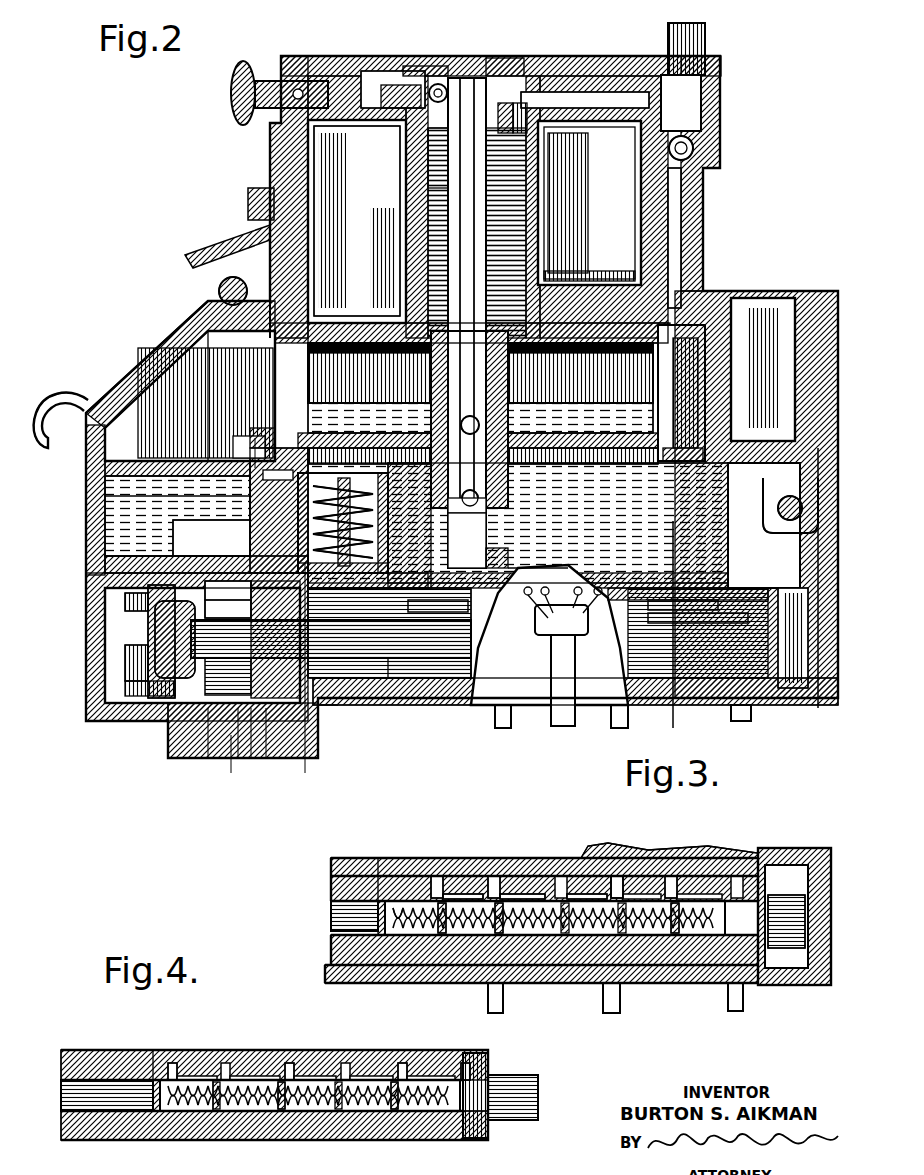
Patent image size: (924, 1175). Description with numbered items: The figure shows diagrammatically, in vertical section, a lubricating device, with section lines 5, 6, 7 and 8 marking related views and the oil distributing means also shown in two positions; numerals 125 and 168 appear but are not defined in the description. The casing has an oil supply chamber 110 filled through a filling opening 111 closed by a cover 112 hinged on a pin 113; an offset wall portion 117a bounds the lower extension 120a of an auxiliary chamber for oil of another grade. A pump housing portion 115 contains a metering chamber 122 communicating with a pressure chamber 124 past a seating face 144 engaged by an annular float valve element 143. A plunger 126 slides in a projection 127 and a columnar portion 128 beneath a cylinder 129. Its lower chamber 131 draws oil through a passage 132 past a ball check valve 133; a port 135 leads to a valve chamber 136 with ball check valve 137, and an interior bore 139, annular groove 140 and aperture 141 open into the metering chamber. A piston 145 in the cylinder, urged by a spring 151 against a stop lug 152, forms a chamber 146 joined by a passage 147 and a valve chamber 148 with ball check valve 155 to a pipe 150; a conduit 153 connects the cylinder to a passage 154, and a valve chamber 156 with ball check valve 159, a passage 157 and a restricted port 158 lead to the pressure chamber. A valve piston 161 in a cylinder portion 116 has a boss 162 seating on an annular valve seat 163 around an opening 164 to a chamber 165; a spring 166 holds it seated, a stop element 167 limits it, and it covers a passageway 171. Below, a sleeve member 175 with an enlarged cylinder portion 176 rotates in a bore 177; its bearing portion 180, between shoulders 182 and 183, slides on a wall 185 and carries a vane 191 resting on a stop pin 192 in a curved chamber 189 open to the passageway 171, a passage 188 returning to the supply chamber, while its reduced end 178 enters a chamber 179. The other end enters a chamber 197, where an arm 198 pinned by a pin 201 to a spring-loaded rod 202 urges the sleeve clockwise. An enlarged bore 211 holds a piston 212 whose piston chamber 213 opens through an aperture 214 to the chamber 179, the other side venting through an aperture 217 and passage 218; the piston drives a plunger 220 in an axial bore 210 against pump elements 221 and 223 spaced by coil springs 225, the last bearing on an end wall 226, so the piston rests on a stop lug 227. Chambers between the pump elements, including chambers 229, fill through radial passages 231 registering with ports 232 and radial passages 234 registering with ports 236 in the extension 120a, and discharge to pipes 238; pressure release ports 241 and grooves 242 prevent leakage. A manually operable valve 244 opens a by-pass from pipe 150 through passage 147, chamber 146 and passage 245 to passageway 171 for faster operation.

In FIG. 2, the section line 5— 5 is at (665, 513).
In FIG. 2, the section line 6— 6 is at (297, 555).
In FIG. 2, the section line 7— 7 is at (804, 433).
In FIG. 2, the section line 8— 8 is at (250, 430).
In FIG. 2, the operating oil supply chamber 110 is at (416, 523).
In FIG. 3, the operating oil supply chamber 110 is at (560, 850).
In FIG. 2, the filling opening 111 is at (150, 333).
In FIG. 2, the cover 112 is at (125, 355).
In FIG. 2, the pin 113 is at (212, 280).
In FIG. 2, the pump housing portion 115 is at (684, 448).
In FIG. 2, the cylinder portion 116 is at (449, 540).
In FIG. 2, the offset portion of interior wall 117a is at (547, 549).
In FIG. 2, the lower extension of auxiliary oil supply chamber 120a is at (627, 575).
In FIG. 3, the lower extension of auxiliary oil supply chamber 120a is at (600, 850).
In FIG. 2, the control or metering chamber 122 is at (330, 362).
In FIG. 2, the pressure chamber 124 is at (620, 195).
In FIG. 2, the valve stem 125 is at (405, 300).
In FIG. 2, the plunger 126 is at (455, 237).
In FIG. 2, the projection 127 is at (583, 455).
In FIG. 2, the columnar portion 128 is at (358, 390).
In FIG. 2, the cylinder 129 is at (548, 193).
In FIG. 2, the chamber 131 is at (450, 515).
In FIG. 2, the passage 132 is at (511, 555).
In FIG. 2, the ball check valve 133 is at (485, 498).
In FIG. 2, the port 135 is at (643, 433).
In FIG. 2, the valve chamber 136 is at (681, 393).
In FIG. 2, the ball check valve 137 is at (580, 418).
In FIG. 2, the interior bore 139 is at (494, 360).
In FIG. 2, the annular groove 140 is at (452, 355).
In FIG. 2, the aperture 141 is at (557, 347).
In FIG. 2, the annular float valve element 143 is at (369, 418).
In FIG. 2, the seating face 144 is at (518, 315).
In FIG. 2, the piston 145 is at (523, 110).
In FIG. 2, the chamber 146 is at (500, 108).
In FIG. 2, the passage 147 is at (623, 95).
In FIG. 2, the valve chamber 148 is at (682, 103).
In FIG. 2, the pipe 150 is at (678, 43).
In FIG. 2, the spring 151 is at (505, 178).
In FIG. 2, the stop lug 152 is at (458, 137).
In FIG. 2, the conduit 153 is at (537, 280).
In FIG. 2, the passage 154 is at (672, 218).
In FIG. 2, the ball check valve 155 is at (682, 145).
In FIG. 2, the valve chamber 156 is at (410, 60).
In FIG. 2, the passage 157 is at (357, 125).
In FIG. 2, the restricted port 158 is at (357, 221).
In FIG. 2, the ball check valve 159 is at (430, 76).
In FIG. 2, the valve piston 161 is at (258, 468).
In FIG. 2, the boss portion 162 is at (253, 430).
In FIG. 2, the annular valve seat 163 is at (300, 423).
In FIG. 2, the opening 164 is at (368, 433).
In FIG. 2, the chamber 165 is at (233, 453).
In FIG. 2, the spring 166 is at (357, 543).
In FIG. 2, the stop element 167 is at (368, 585).
In FIG. 2, the ball 168 is at (455, 420).
In FIG. 2, the passageway 171 is at (260, 473).
In FIG. 2, the sleeve member 175 is at (367, 683).
In FIG. 3, the sleeve member 175 is at (588, 950).
In FIG. 4, the sleeve member 175 is at (403, 1103).
In FIG. 2, the enlarged cylinder portion 176 is at (120, 707).
In FIG. 2, the bore 177 is at (480, 697).
In FIG. 3, the bore 177 is at (550, 957).
In FIG. 2, the end of reduced diameter 178 is at (110, 590).
In FIG. 2, the chamber 179 is at (145, 677).
In FIG. 2, the bearing portion 180 is at (243, 713).
In FIG. 2, the annular off-set shoulder 182 is at (167, 703).
In FIG. 2, the annular off-set shoulder 183 is at (258, 745).
In FIG. 2, the wall 185 is at (230, 720).
In FIG. 2, the passage 188 is at (312, 737).
In FIG. 2, the curved chamber 189 is at (177, 496).
In FIG. 2, the vane 191 is at (187, 540).
In FIG. 2, the stop pin 192 is at (185, 527).
In FIG. 2, the chamber 197 is at (770, 673).
In FIG. 3, the chamber 197 is at (793, 870).
In FIG. 2, the arm 198 is at (823, 687).
In FIG. 2, the pin 201 is at (774, 502).
In FIG. 2, the rod 202 is at (795, 495).
In FIG. 2, the axial bore 210 is at (458, 660).
In FIG. 3, the axial bore 210 is at (325, 888).
In FIG. 4, the axial bore 210 is at (80, 1087).
In FIG. 2, the enlarged bore 211 is at (200, 713).
In FIG. 2, the piston 212 is at (83, 707).
In FIG. 2, the piston chamber 213 is at (133, 597).
In FIG. 2, the aperture 214 is at (118, 608).
In FIG. 2, the aperture 217 is at (228, 591).
In FIG. 2, the passage 218 is at (228, 611).
In FIG. 2, the plunger 220 is at (347, 685).
In FIG. 3, the plunger 220 is at (350, 900).
In FIG. 4, the plunger 220 is at (113, 1087).
In FIG. 3, the pump elements 221 is at (453, 917).
In FIG. 4, the pump elements 221 is at (200, 1100).
In FIG. 3, the pump elements 223 is at (640, 915).
In FIG. 4, the pump elements 223 is at (337, 1100).
In FIG. 3, the coil springs 225 is at (380, 905).
In FIG. 4, the coil springs 225 is at (277, 1105).
In FIG. 3, the end wall 226 is at (740, 925).
In FIG. 4, the end wall 226 is at (470, 1103).
In FIG. 2, the stop lug 227 is at (120, 630).
In FIG. 3, the chambers 229 is at (545, 900).
In FIG. 3, the radial passages 231 is at (429, 870).
In FIG. 4, the radial passages 231 is at (278, 1052).
In FIG. 2, the ports 232 is at (470, 575).
In FIG. 3, the ports 232 is at (527, 855).
In FIG. 3, the radial passages 234 is at (690, 850).
In FIG. 4, the radial passages 234 is at (340, 1040).
In FIG. 2, the ports 236 is at (733, 575).
In FIG. 3, the ports 236 is at (600, 853).
In FIG. 2, the conduits or pipes 238 is at (607, 713).
In FIG. 2, the pressure release ports 241 is at (537, 612).
In FIG. 2, the grooves 242 is at (713, 593).
In FIG. 2, the manually operable valve 244 is at (265, 70).
In FIG. 2, the passage 245 is at (483, 58).